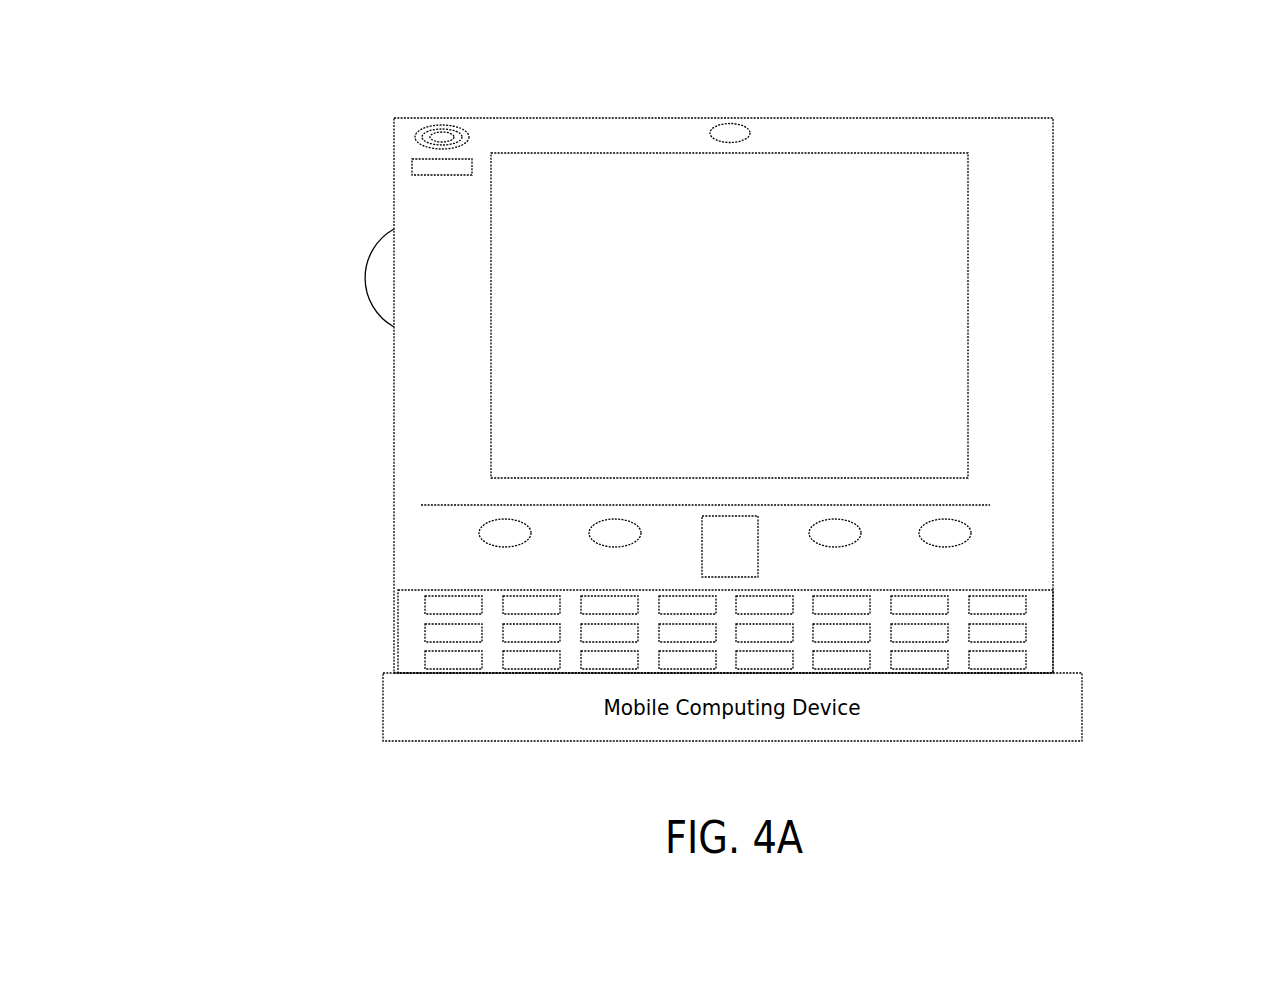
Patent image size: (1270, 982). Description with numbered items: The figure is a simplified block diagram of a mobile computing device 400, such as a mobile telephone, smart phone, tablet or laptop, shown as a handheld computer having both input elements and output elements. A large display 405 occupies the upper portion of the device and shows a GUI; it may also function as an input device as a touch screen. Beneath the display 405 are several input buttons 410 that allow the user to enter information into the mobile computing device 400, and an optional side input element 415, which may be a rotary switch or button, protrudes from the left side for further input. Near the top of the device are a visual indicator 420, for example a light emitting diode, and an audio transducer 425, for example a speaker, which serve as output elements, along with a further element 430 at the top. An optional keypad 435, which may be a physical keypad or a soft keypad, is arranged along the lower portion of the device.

The mobile computing device 400 is at (1038, 128).
The display 405 is at (638, 421).
The input buttons 410 is at (728, 556).
The side input element 415 is at (381, 276).
The visual indicator 420 is at (412, 168).
The audio transducer 425 is at (415, 138).
The sensor 430 is at (750, 133).
The keypad 435 is at (405, 663).